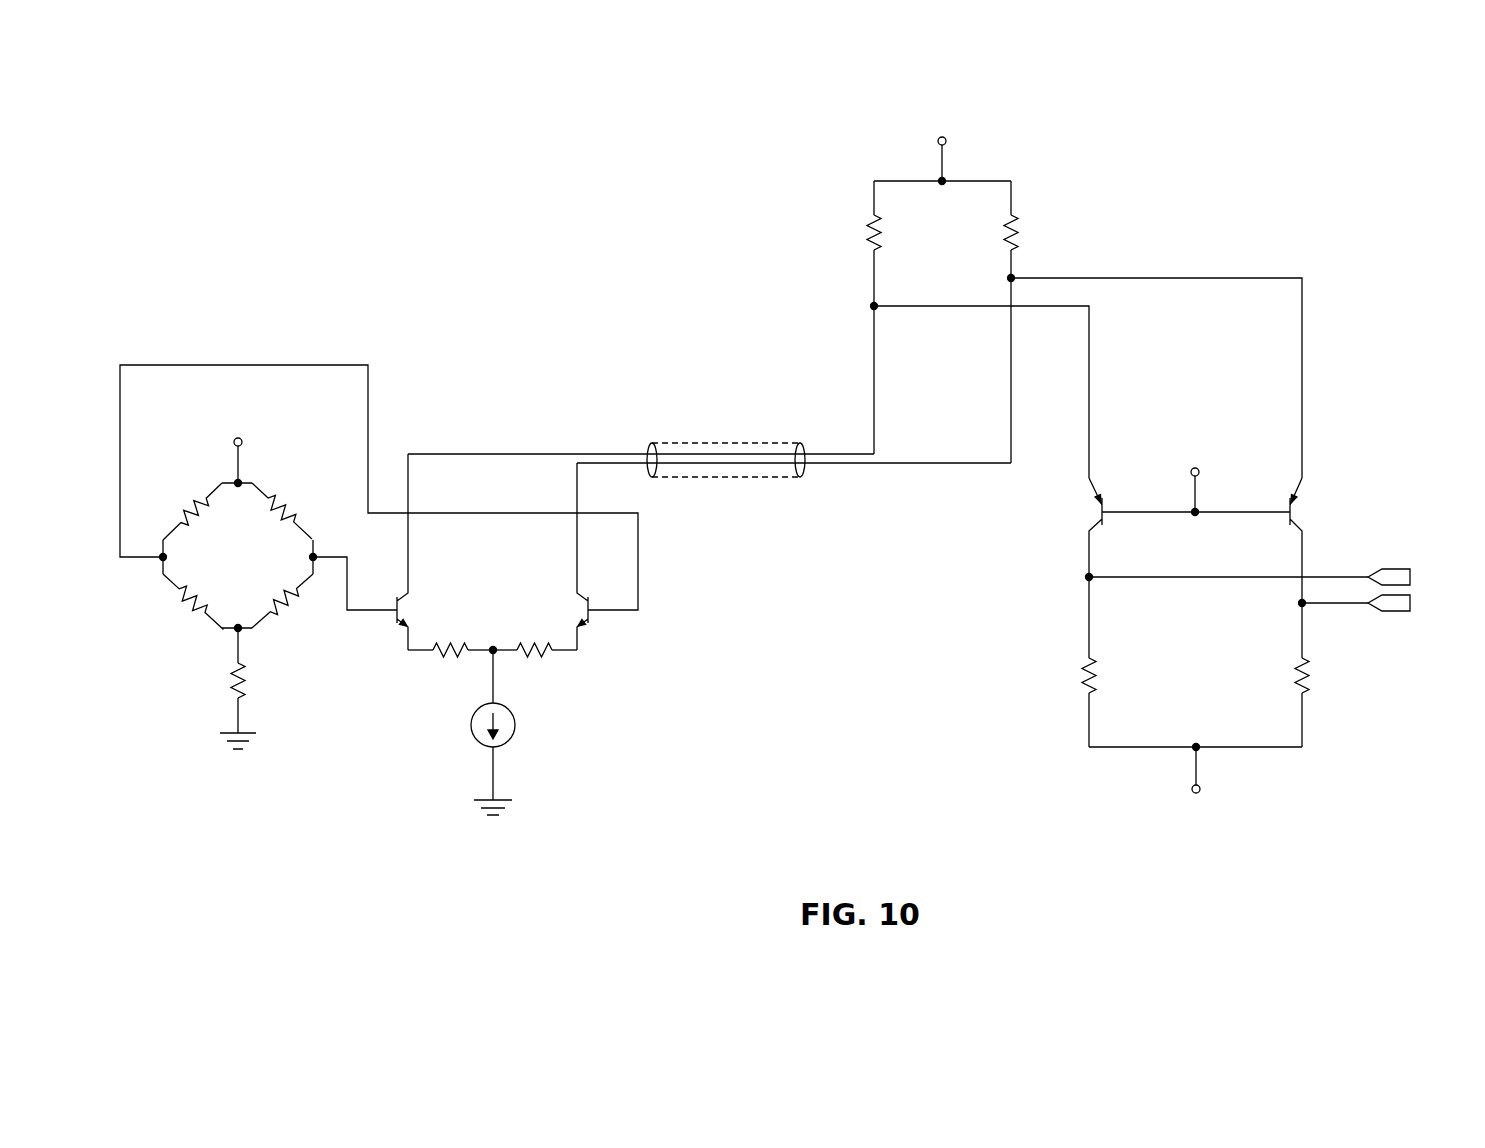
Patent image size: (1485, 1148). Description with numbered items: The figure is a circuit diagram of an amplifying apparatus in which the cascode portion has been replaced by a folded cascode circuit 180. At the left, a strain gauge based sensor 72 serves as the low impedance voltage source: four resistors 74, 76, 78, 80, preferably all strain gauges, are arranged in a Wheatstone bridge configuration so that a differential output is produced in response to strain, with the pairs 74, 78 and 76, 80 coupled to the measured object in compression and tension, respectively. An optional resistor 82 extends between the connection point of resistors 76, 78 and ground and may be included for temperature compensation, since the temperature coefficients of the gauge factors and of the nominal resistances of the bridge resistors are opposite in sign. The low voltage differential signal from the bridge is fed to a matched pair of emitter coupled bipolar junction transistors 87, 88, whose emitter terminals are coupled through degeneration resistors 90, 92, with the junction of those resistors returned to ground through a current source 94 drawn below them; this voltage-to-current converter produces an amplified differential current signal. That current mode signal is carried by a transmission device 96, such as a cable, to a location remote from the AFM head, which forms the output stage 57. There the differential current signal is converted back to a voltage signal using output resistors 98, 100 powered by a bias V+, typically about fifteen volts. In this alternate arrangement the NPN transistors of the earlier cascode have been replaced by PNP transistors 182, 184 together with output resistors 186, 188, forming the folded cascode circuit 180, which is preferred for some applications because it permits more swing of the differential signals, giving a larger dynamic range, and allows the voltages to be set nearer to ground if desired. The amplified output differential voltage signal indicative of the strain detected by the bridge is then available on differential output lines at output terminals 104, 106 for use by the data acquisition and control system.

The output stage 57 is at (1228, 175).
The strain gauge based sensor 72 is at (196, 650).
The resistor 74 is at (282, 503).
The resistor 76 is at (282, 612).
The resistor 78 is at (193, 607).
The resistor 80 is at (198, 503).
The resistor 82 is at (240, 700).
The emitter coupled transistor 87 is at (417, 589).
The emitter coupled transistor 88 is at (567, 589).
The degeneration resistor 90 is at (441, 655).
The degeneration resistor 92 is at (551, 655).
The current source 94 is at (515, 727).
The transmission device 96 is at (702, 441).
The output resistor 98 is at (874, 226).
The output resistor 100 is at (1012, 230).
The output terminal 104 is at (1393, 568).
The output terminal 106 is at (1393, 612).
The folded cascode circuit 180 is at (1288, 252).
The PNP transistor 182 is at (1100, 471).
The PNP transistor 184 is at (1292, 471).
The output resistor 186 is at (1089, 680).
The output resistor 188 is at (1302, 688).